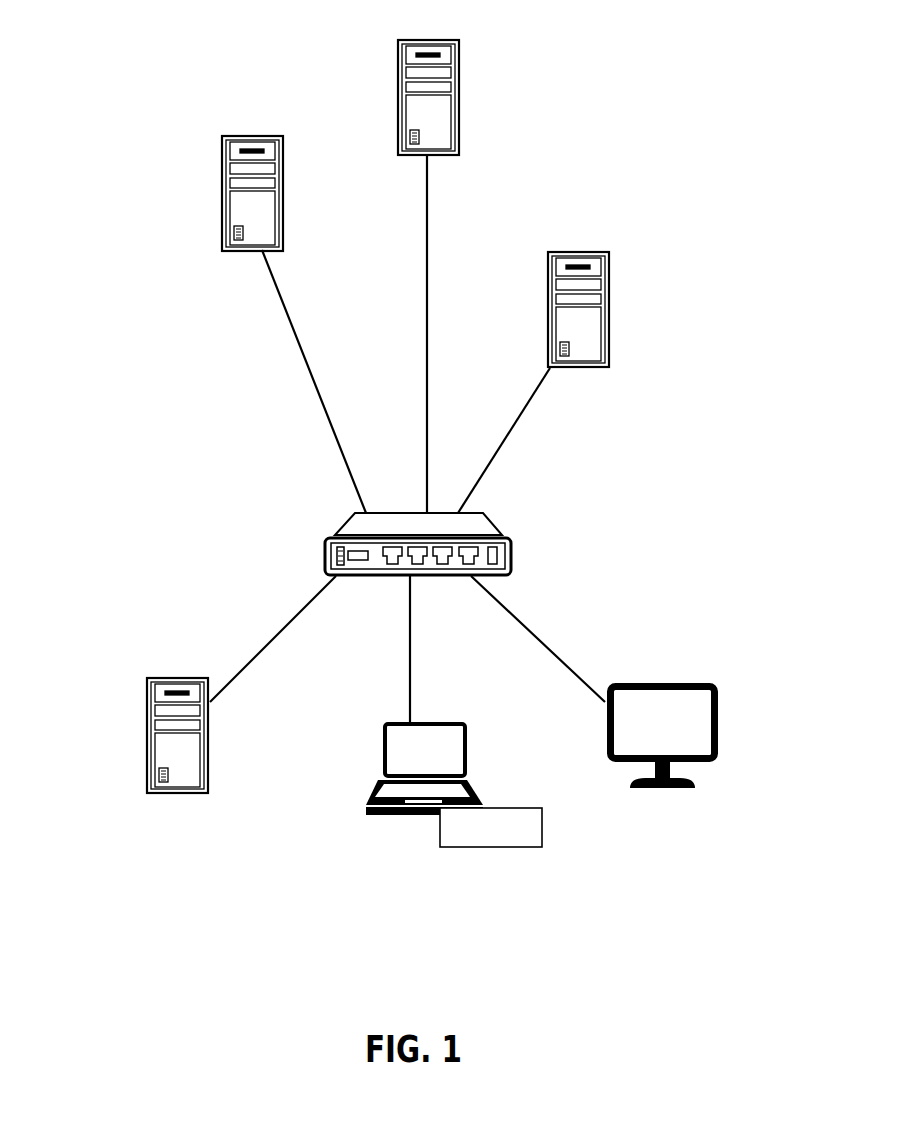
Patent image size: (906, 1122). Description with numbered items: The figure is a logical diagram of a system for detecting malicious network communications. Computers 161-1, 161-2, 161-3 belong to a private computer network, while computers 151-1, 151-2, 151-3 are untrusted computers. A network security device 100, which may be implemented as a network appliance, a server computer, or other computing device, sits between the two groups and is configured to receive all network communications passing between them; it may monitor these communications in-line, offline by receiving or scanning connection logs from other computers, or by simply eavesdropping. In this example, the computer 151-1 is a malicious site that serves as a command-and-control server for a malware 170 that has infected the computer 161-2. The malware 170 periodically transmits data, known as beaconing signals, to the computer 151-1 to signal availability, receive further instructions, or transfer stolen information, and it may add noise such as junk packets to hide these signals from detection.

The network security device 100 is at (488, 522).
The computer 151-1 is at (227, 136).
The computer 151-2 is at (443, 40).
The computer 151-3 is at (563, 252).
The computer 161-1 is at (163, 678).
The computer 161-2 is at (457, 722).
The computer 161-3 is at (700, 683).
The malware 170 is at (507, 848).